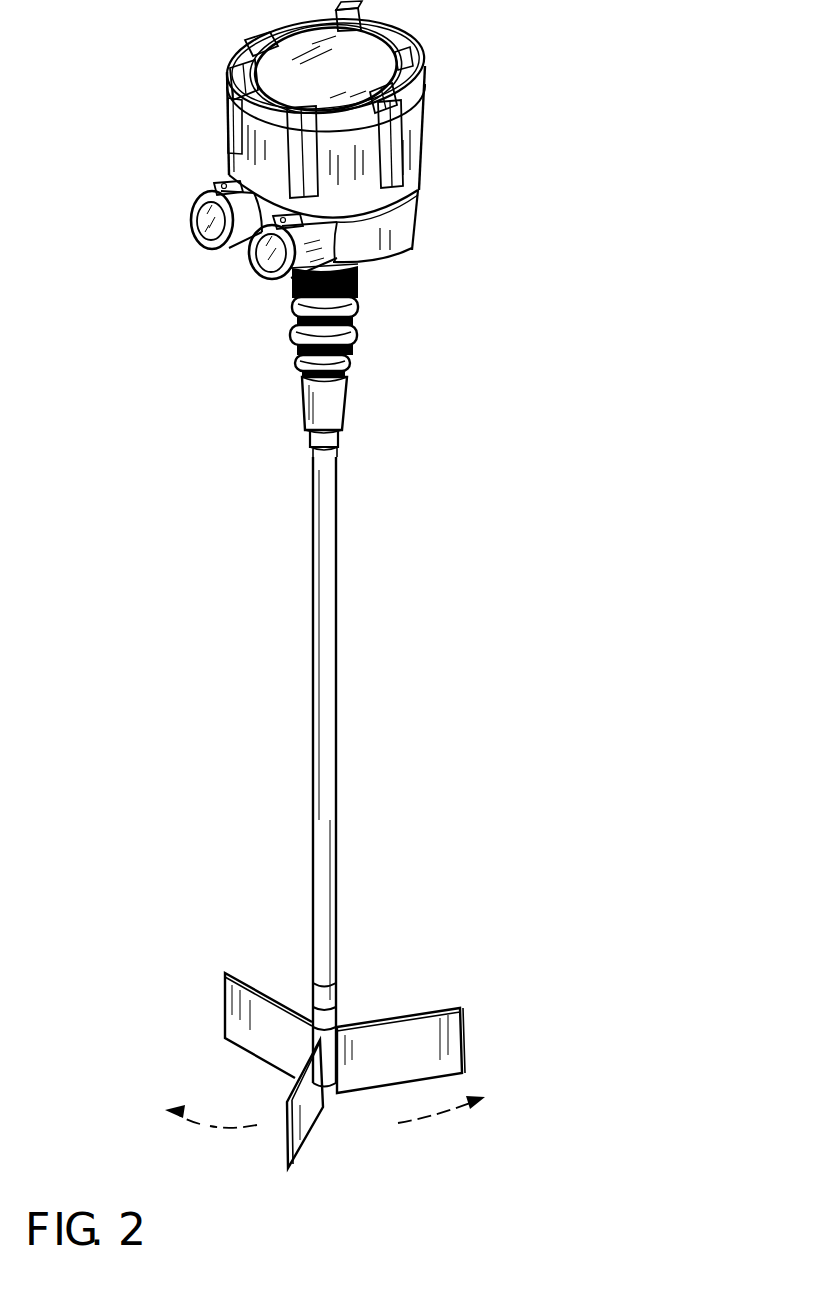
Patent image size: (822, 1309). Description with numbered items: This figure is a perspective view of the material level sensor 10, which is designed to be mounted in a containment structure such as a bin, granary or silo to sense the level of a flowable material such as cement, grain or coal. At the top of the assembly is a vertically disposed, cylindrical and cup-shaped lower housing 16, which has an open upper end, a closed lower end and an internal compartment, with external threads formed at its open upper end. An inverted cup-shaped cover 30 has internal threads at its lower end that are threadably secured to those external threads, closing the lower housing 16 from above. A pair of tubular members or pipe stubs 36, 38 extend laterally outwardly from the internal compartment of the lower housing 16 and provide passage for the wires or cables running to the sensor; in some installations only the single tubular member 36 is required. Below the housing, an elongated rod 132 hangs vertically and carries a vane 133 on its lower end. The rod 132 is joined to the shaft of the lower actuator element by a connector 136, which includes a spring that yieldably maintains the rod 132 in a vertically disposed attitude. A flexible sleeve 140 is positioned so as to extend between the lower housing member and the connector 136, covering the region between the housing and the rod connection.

The material level sensor 10 is at (532, 286).
The lower housing 16 is at (407, 231).
The cover 30 is at (420, 119).
The tubular member 36 is at (196, 246).
The tubular member 38 is at (265, 279).
The elongated rod 132 is at (328, 702).
The vane 133 is at (463, 1038).
The connector 136 is at (343, 408).
The flexible sleeve 140 is at (357, 322).